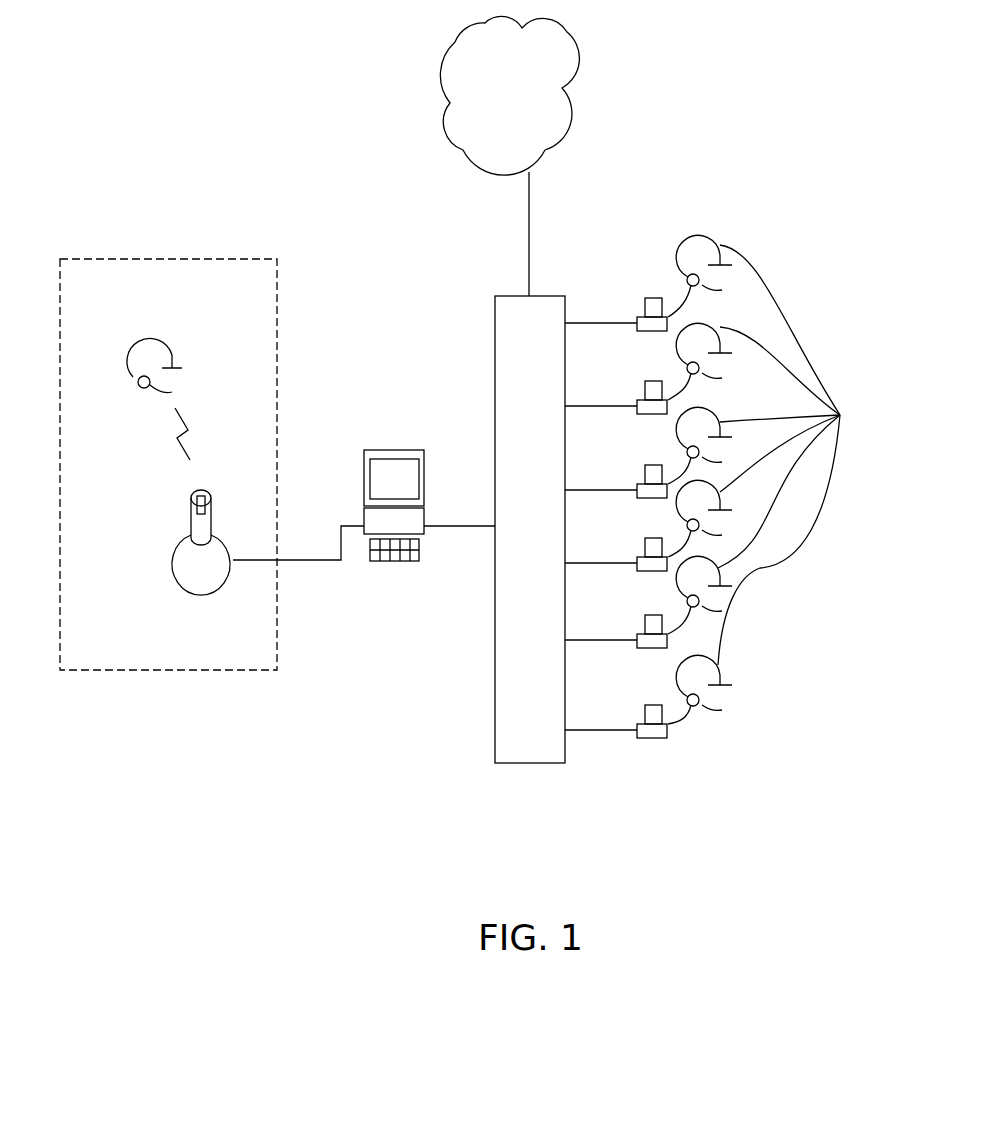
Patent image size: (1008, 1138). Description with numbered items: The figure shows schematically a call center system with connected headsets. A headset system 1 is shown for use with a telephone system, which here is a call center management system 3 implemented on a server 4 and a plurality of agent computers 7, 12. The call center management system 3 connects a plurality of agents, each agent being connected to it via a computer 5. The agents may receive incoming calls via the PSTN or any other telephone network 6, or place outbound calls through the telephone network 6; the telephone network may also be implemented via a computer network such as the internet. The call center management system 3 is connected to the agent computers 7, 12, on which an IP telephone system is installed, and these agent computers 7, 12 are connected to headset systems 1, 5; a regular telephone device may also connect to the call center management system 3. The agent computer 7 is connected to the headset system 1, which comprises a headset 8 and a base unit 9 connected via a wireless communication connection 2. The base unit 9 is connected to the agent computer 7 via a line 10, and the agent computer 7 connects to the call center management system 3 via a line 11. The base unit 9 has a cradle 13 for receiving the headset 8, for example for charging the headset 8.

The headset system 1 is at (243, 258).
The wireless communication connection 2 is at (195, 428).
The call center management system 3 is at (607, 763).
The server 4 is at (520, 763).
The computer 5 is at (798, 455).
The telephone network 6 is at (566, 90).
The agent computer 7 is at (364, 477).
The headset 8 is at (145, 332).
The base unit 9 is at (207, 596).
The line 10 is at (303, 560).
The line 11 is at (462, 526).
The agent computer 12 is at (645, 299).
The cradle 13 is at (210, 495).